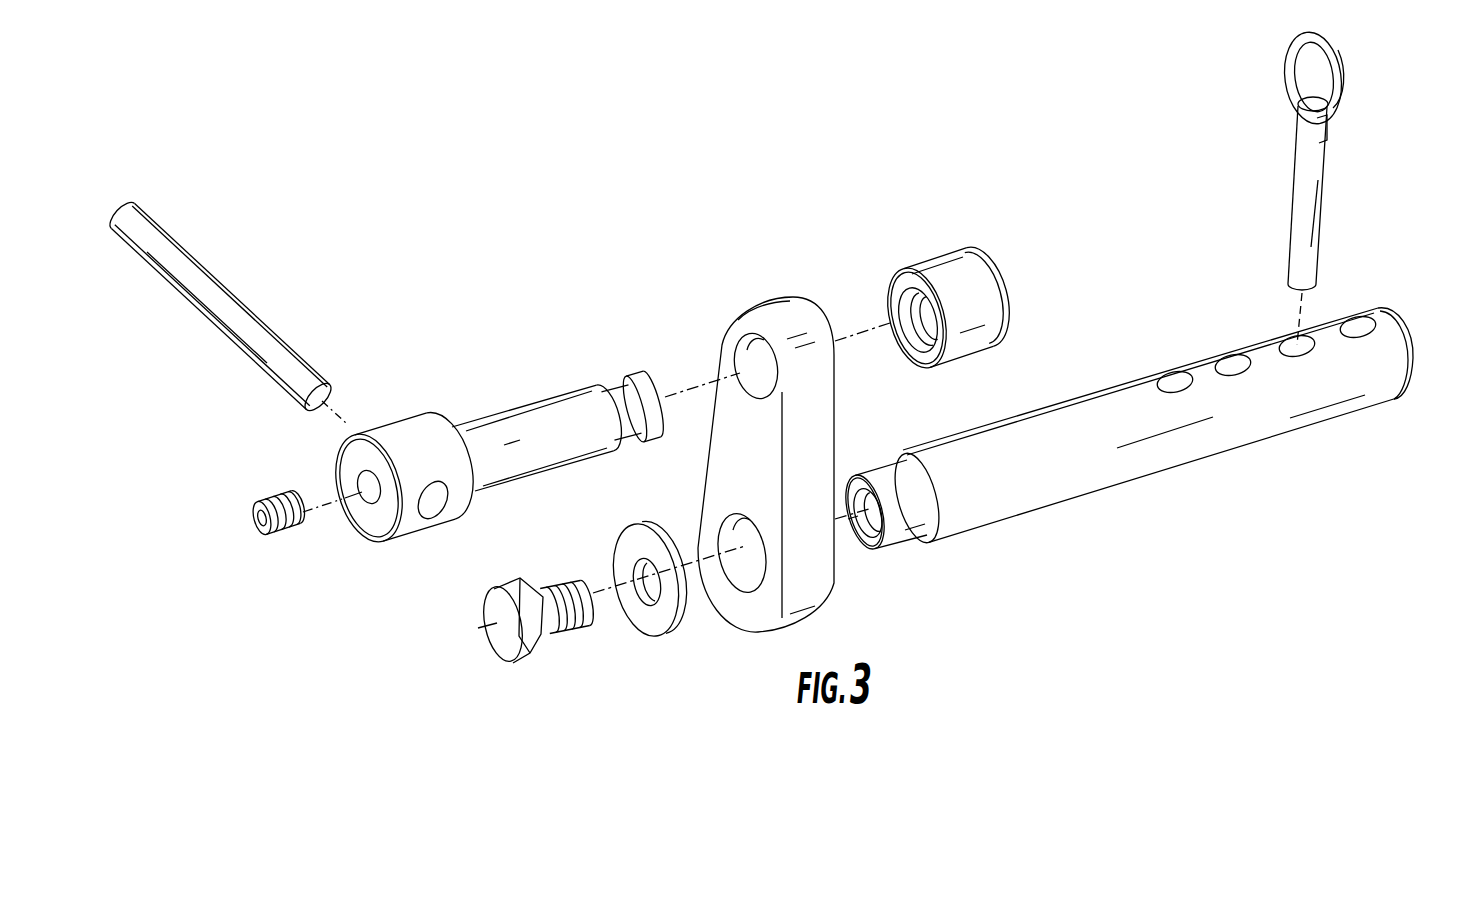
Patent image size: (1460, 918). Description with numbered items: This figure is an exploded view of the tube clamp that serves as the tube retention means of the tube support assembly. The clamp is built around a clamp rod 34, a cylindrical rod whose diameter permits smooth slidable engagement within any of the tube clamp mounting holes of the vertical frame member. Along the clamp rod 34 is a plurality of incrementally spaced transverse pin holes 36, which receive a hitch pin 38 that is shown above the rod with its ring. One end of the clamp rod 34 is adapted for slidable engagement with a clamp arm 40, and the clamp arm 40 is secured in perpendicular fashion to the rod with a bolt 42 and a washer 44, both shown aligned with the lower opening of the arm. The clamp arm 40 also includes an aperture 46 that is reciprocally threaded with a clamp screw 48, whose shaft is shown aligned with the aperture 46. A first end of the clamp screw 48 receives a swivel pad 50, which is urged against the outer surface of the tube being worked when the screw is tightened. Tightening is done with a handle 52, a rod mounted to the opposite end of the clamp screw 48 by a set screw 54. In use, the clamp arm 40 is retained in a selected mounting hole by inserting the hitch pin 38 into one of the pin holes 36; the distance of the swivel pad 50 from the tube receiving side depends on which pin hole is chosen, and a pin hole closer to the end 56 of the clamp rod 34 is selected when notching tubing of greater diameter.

The clamp rod 34 is at (1052, 490).
The transverse pin holes 36 is at (1290, 347).
The hitch pin 38 is at (1300, 198).
The clamp arm 40 is at (790, 313).
The bolt 42 is at (497, 624).
The washer 44 is at (635, 545).
The aperture 46 is at (742, 361).
The clamp screw 48 is at (568, 413).
The swivel pad 50 is at (948, 277).
The handle 52 is at (257, 348).
The set screw 54 is at (250, 523).
The end of clamp rod 56 is at (1406, 345).